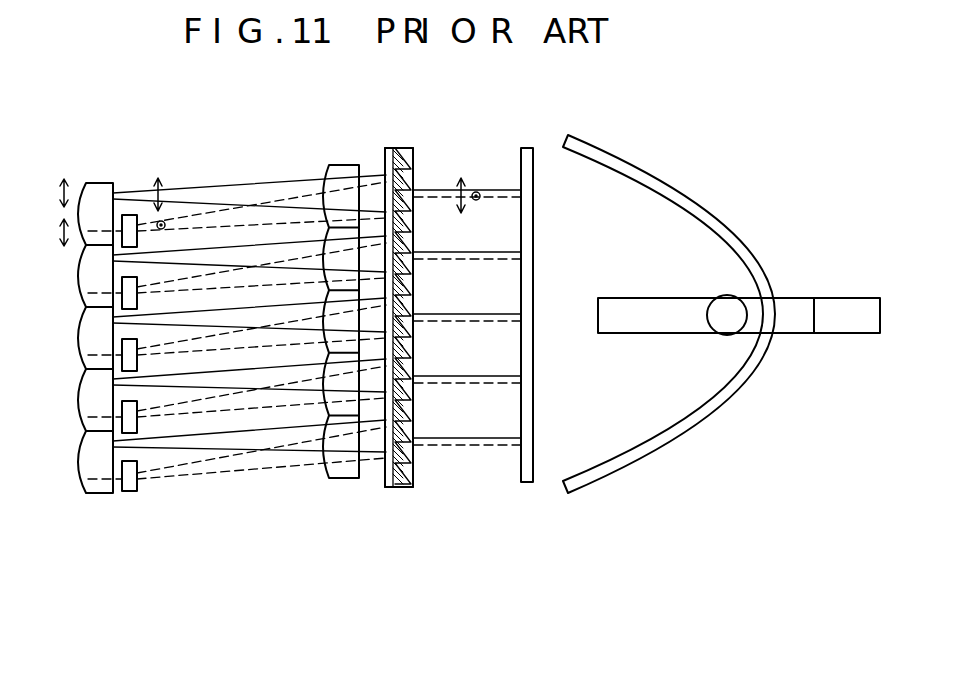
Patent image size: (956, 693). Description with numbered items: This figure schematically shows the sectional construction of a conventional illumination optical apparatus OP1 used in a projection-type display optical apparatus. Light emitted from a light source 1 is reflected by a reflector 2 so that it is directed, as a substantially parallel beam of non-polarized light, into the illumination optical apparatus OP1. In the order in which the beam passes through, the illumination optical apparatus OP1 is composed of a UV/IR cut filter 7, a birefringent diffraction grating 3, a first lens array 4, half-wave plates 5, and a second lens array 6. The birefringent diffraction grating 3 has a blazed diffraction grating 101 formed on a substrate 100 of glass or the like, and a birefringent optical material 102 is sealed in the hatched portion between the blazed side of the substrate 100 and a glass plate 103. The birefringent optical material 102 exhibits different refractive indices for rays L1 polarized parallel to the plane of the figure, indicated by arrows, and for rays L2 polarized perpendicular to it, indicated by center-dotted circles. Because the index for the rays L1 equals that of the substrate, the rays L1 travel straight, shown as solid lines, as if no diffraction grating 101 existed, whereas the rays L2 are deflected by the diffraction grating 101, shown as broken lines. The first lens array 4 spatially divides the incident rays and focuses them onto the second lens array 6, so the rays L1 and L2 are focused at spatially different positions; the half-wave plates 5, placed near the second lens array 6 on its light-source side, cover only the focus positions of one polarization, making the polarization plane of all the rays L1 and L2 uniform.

The light source 1 is at (727, 330).
The reflector 2 is at (708, 420).
The birefringent diffraction grating 3 is at (437, 304).
The first lens array 4 is at (365, 501).
The half-wave plates 5 is at (140, 502).
The second lens array 6 is at (113, 502).
The UV/IR cut filter 7 is at (533, 222).
The substrate 100 is at (414, 153).
The blazed diffraction grating 101 is at (416, 182).
The birefringent optical material 102 is at (394, 160).
The glass plate 103 is at (384, 176).
The rays having a polarization plane parallel to the plane of the figure L1 is at (240, 184).
The rays having a polarization plane perpendicular to the plane of the figure L2 is at (288, 190).
The illumination optical apparatus OP1 is at (548, 535).